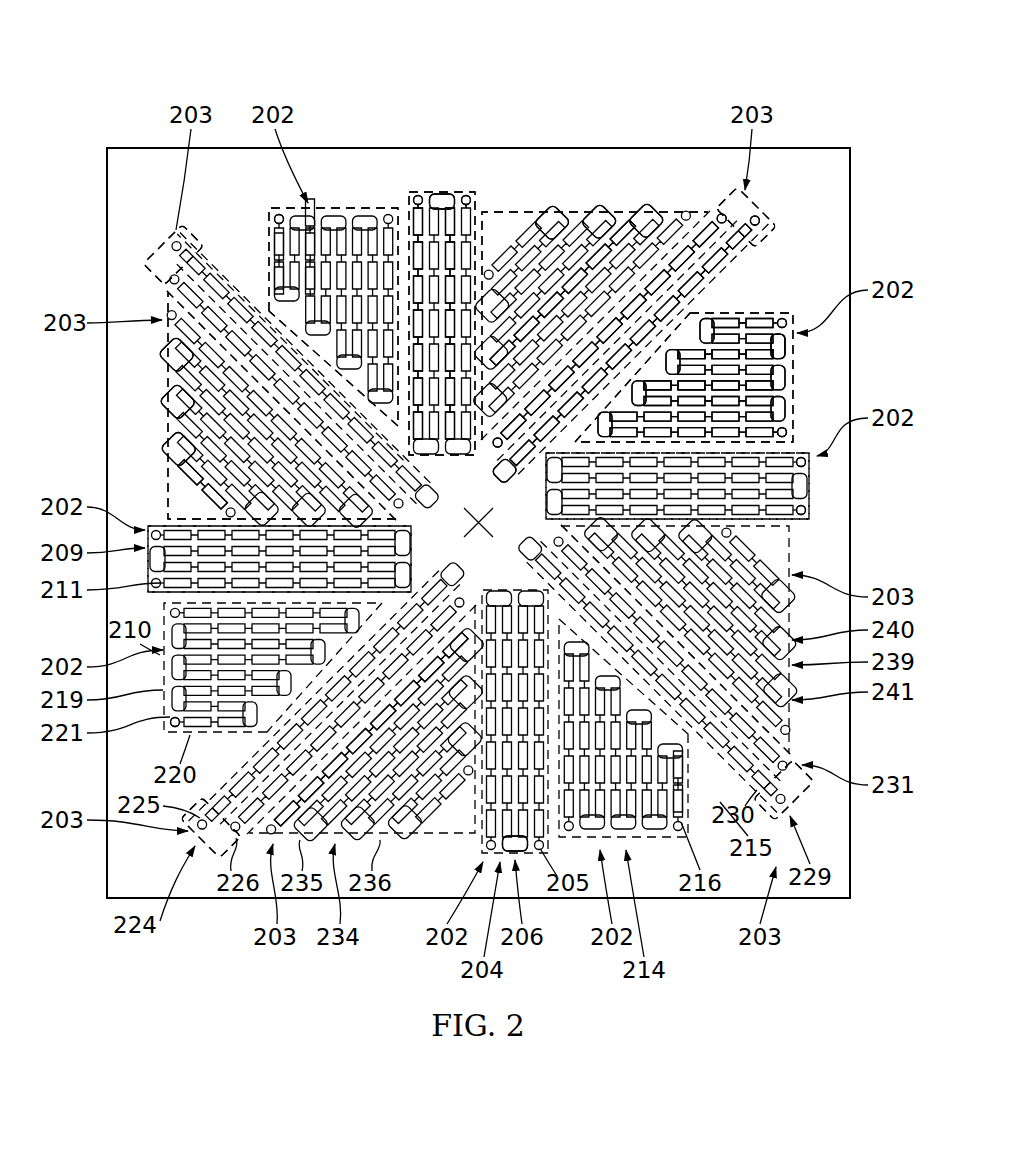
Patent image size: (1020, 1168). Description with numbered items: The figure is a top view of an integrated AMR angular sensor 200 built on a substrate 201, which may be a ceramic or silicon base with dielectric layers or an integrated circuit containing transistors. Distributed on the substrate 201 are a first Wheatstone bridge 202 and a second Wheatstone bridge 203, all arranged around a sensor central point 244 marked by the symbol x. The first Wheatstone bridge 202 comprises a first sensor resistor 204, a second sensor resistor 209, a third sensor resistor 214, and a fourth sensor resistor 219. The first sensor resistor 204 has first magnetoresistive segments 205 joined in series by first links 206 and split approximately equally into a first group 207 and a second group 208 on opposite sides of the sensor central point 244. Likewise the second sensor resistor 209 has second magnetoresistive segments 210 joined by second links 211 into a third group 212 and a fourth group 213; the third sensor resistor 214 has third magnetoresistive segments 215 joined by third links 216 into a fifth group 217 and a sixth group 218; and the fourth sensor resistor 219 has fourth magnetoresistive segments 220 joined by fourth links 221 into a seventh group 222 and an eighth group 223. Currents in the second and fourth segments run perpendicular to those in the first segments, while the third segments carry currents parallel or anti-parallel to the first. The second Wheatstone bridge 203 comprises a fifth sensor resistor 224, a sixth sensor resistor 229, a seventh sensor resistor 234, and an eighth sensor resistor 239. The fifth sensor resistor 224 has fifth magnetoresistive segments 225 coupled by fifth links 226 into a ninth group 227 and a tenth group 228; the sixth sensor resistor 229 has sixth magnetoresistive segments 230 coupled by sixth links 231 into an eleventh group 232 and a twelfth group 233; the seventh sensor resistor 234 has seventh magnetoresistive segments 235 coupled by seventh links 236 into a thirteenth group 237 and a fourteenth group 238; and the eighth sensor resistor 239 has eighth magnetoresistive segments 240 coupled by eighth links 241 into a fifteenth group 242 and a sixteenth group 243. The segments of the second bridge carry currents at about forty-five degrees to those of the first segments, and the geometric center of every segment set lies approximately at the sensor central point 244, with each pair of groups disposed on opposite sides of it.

The integrated AMR angular sensor 200 is at (676, 62).
The substrate 201 is at (107, 866).
The first Wheatstone bridge 202 is at (428, 190).
The second Wheatstone bridge 203 is at (546, 210).
The first sensor resistor 204 is at (452, 190).
The first magnetoresistive segments 205 is at (416, 200).
The first links 206 is at (441, 192).
The first group 207 is at (473, 194).
The second group 208 is at (526, 855).
The second sensor resistor 209 is at (817, 500).
The second magnetoresistive segments 210 is at (790, 448).
The second links 211 is at (803, 488).
The third group 212 is at (817, 518).
The fourth group 213 is at (160, 605).
The third sensor resistor 214 is at (324, 198).
The third magnetoresistive segments 215 is at (266, 240).
The third links 216 is at (278, 212).
The fifth group 217 is at (352, 200).
The sixth group 218 is at (652, 848).
The fourth sensor resistor 219 is at (797, 377).
The fourth magnetoresistive segments 220 is at (781, 312).
The fourth links 221 is at (788, 345).
The seventh group 222 is at (797, 398).
The eighth group 223 is at (172, 735).
The fifth sensor resistor 224 is at (762, 204).
The fifth magnetoresistive segments 225 is at (744, 252).
The fifth links 226 is at (736, 196).
The ninth group 227 is at (776, 216).
The tenth group 228 is at (208, 860).
The sixth sensor resistor 229 is at (170, 234).
The sixth magnetoresistive segments 230 is at (250, 272).
The sixth links 231 is at (160, 285).
The eleventh group 232 is at (808, 794).
The twelfth group 233 is at (148, 254).
The seventh sensor resistor 234 is at (618, 210).
The seventh magnetoresistive segments 235 is at (574, 218).
The seventh links 236 is at (640, 218).
The thirteenth group 237 is at (668, 210).
The fourteenth group 238 is at (407, 845).
The eighth sensor resistor 239 is at (162, 407).
The eighth magnetoresistive segments 240 is at (177, 440).
The eighth links 241 is at (177, 378).
The fifteenth group 242 is at (796, 728).
The sixteenth group 243 is at (162, 472).
The sensor central point 244 is at (478, 516).